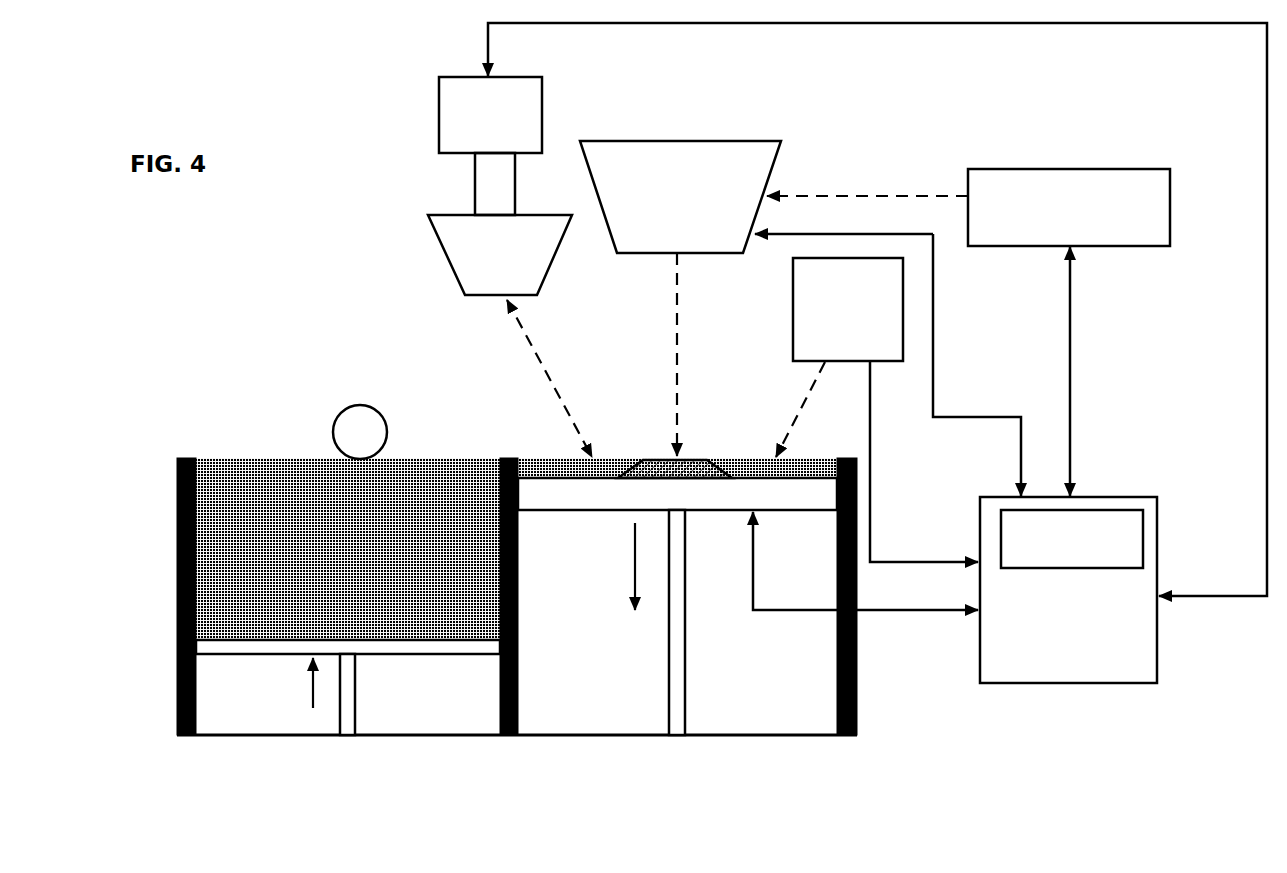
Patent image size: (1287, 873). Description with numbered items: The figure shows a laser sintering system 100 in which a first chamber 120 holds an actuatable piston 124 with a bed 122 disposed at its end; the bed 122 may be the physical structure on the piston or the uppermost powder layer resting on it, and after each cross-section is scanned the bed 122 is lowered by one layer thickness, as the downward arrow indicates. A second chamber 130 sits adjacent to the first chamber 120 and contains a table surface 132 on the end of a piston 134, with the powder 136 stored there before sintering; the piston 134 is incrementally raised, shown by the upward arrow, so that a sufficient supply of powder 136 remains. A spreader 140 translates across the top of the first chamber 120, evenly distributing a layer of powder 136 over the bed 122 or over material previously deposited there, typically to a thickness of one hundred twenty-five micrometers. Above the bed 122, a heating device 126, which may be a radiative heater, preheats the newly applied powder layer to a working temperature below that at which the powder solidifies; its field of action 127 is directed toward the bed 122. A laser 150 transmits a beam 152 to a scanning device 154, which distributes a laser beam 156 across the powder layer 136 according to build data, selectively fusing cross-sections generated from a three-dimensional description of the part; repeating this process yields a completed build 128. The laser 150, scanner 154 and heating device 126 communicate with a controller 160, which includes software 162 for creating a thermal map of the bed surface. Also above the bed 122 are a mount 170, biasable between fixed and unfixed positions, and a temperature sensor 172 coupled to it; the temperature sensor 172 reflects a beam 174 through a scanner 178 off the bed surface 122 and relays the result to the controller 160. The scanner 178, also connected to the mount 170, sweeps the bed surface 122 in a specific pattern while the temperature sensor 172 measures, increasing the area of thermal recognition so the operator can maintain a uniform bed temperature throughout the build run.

The LS system 100 is at (333, 212).
The first chamber 120 is at (594, 695).
The bed 122 is at (555, 497).
The piston 124 is at (685, 700).
The heating device 126 is at (793, 330).
The sensor field of view 127 is at (797, 410).
The build 128 is at (648, 460).
The second chamber 130 is at (255, 713).
The table surface 132 is at (432, 648).
The piston 134 is at (357, 700).
The powder 136 is at (255, 478).
The spreader 140 is at (345, 410).
The laser 150 is at (1138, 169).
The beam 152 is at (838, 196).
The scanning device 154 is at (685, 141).
The laser beam 156 is at (677, 375).
The controller 160 is at (1115, 497).
The memory 162 is at (1118, 560).
The mount 170 is at (439, 100).
The temperature sensor 172 is at (475, 190).
The beam 174 is at (540, 370).
The scanner 178 is at (440, 245).